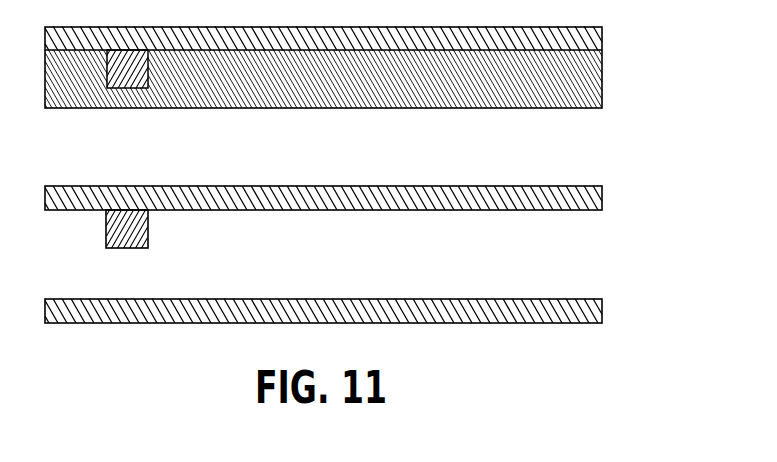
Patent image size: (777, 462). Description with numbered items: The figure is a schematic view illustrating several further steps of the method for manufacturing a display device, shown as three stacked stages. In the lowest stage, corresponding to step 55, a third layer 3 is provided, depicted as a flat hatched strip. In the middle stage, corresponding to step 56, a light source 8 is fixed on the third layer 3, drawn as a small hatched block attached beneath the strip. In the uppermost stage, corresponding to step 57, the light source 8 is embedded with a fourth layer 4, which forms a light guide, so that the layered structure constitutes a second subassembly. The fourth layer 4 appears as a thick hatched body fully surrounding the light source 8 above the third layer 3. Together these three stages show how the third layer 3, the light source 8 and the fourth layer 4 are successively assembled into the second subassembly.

The third layer 3 is at (558, 312).
The fourth layer 4 is at (390, 85).
The light source 8 is at (130, 227).
The step of providing a third layer 55 is at (351, 345).
The step of fixing a light source 56 is at (351, 224).
The step of embedding the light source 57 is at (351, 103).